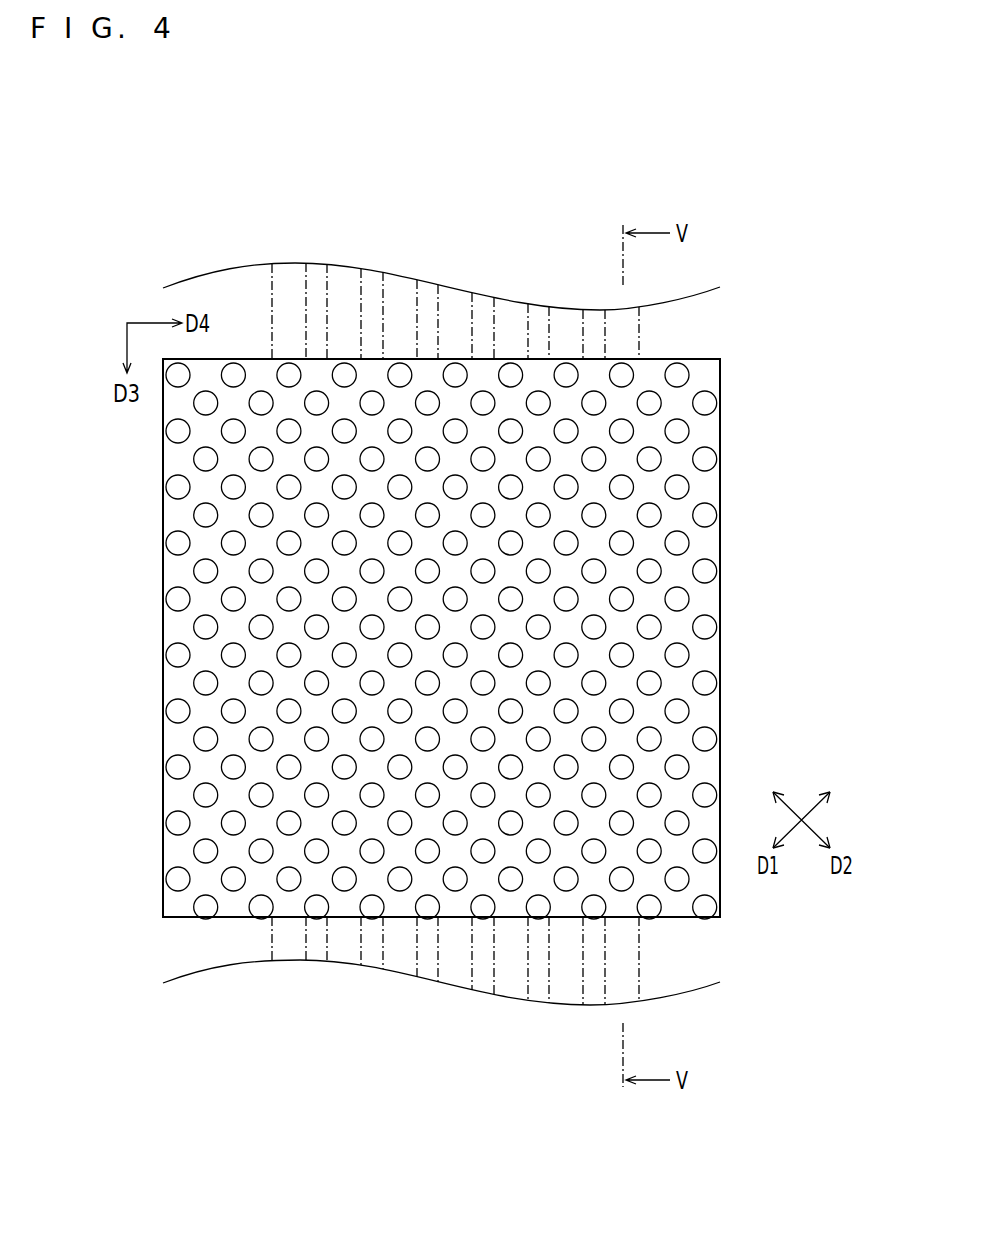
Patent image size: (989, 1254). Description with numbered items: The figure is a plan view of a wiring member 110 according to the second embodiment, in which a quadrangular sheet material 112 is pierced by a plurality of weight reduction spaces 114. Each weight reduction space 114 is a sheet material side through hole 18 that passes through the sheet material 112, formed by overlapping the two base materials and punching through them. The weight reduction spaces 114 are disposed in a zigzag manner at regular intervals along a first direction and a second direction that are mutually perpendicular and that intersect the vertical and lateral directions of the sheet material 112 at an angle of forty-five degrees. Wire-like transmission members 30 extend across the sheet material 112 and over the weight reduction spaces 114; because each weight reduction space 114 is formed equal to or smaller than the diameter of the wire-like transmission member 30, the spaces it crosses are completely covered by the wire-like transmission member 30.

The wiring member 110 is at (177, 177).
The sheet material 112 is at (726, 406).
The weight reduction space 114 is at (684, 492).
The sheet material side through hole 18 is at (499, 641).
The wire-like transmission member 30 is at (438, 964).